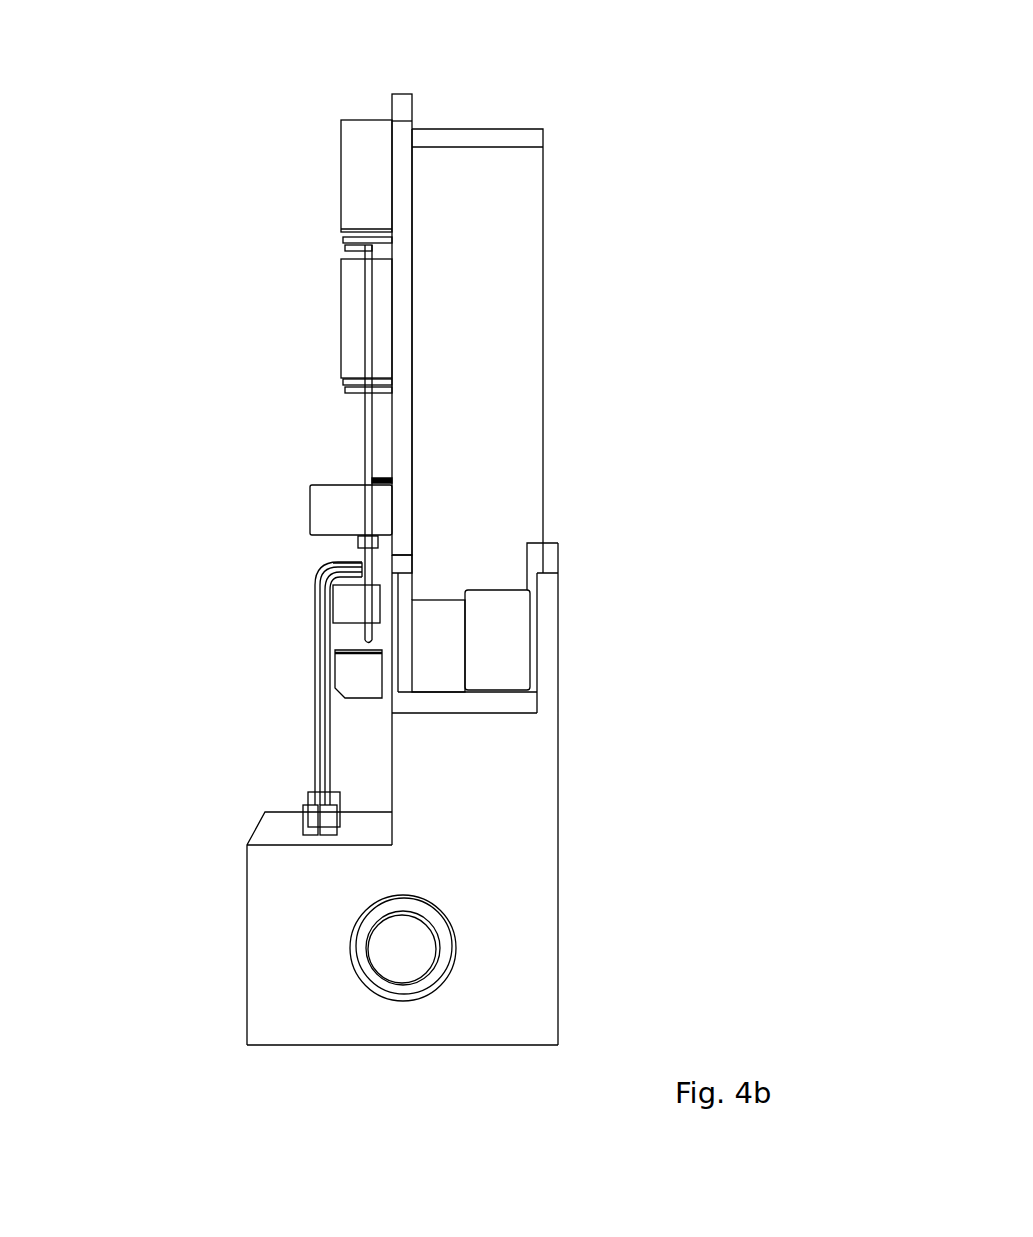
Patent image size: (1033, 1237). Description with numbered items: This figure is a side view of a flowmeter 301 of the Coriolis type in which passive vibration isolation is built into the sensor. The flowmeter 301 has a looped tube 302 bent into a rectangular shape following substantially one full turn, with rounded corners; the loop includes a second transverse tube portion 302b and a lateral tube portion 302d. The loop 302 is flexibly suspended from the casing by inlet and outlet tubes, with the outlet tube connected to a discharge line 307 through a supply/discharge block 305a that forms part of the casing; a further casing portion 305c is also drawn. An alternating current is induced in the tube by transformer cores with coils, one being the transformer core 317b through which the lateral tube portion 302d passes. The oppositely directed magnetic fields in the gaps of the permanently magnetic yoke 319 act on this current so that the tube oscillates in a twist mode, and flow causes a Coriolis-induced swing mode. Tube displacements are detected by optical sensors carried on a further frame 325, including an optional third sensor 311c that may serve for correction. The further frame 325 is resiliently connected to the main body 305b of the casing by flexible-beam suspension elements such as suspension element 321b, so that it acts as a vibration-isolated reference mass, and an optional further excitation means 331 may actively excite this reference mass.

The flowmeter 301 is at (622, 75).
The main body of the casing 305b is at (396, 150).
The permanently magnetic yoke 319 is at (362, 163).
The second transverse tube portion 302b is at (362, 252).
The looped tube 302 is at (367, 430).
The transformer core 317b is at (330, 502).
The lateral tube portion 302d is at (362, 548).
The third sensor 311c is at (350, 678).
The suspension element 321b is at (392, 668).
The further frame 325 is at (403, 603).
The further excitation means 331 is at (482, 627).
The third housing portion 305c is at (543, 743).
The supply/discharge block 305a is at (270, 905).
The discharge line 307 is at (415, 952).